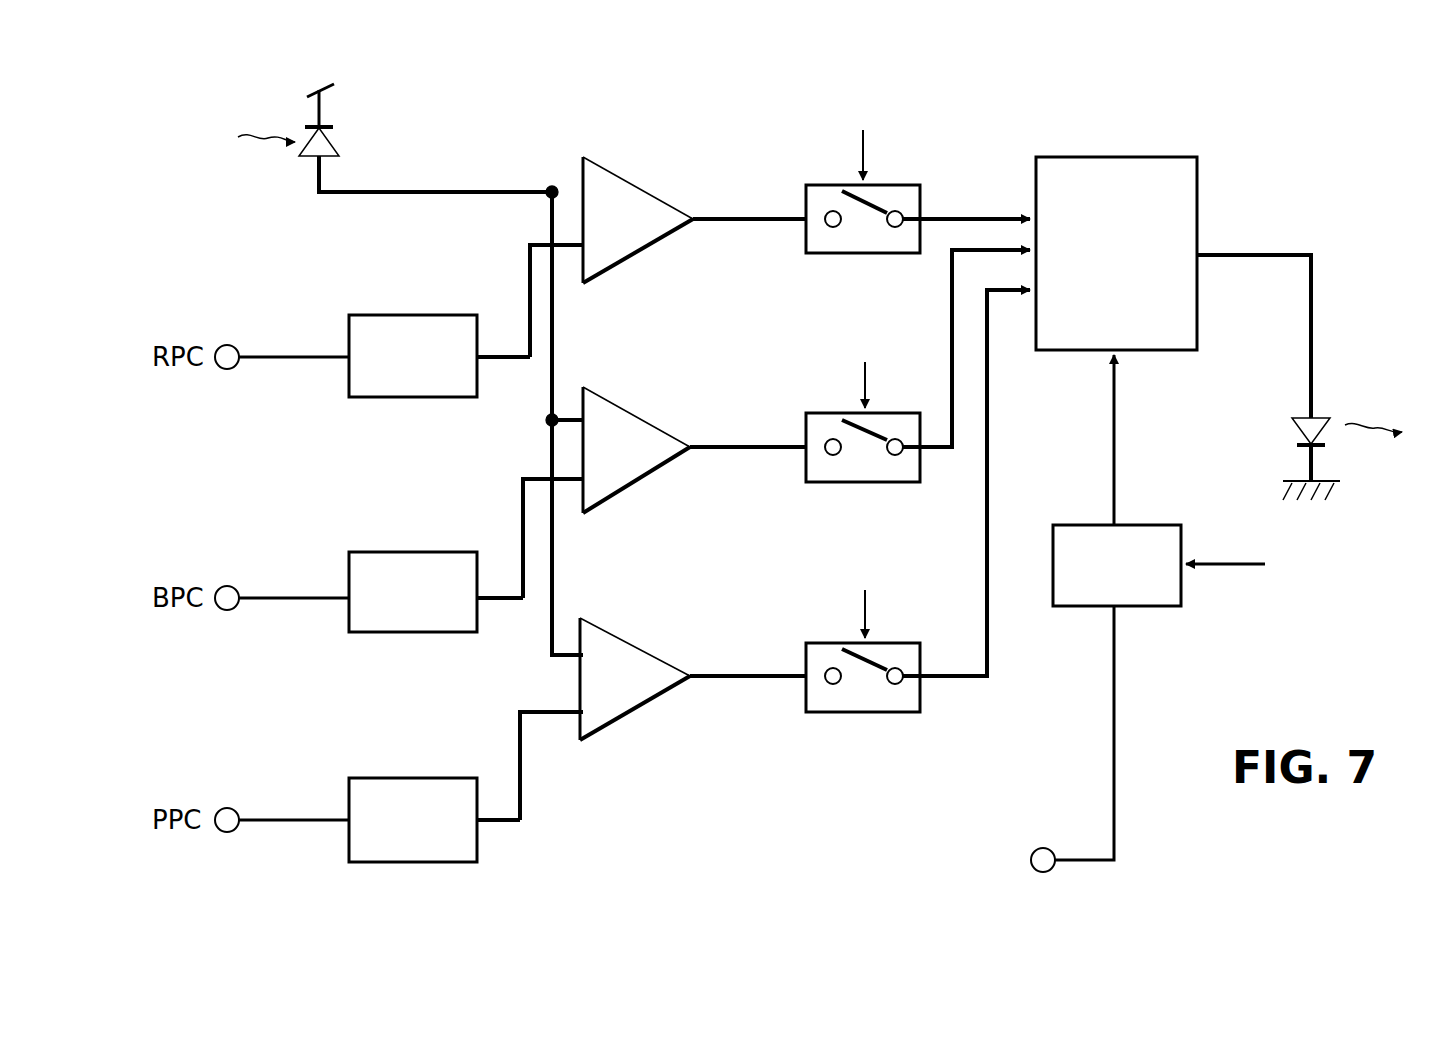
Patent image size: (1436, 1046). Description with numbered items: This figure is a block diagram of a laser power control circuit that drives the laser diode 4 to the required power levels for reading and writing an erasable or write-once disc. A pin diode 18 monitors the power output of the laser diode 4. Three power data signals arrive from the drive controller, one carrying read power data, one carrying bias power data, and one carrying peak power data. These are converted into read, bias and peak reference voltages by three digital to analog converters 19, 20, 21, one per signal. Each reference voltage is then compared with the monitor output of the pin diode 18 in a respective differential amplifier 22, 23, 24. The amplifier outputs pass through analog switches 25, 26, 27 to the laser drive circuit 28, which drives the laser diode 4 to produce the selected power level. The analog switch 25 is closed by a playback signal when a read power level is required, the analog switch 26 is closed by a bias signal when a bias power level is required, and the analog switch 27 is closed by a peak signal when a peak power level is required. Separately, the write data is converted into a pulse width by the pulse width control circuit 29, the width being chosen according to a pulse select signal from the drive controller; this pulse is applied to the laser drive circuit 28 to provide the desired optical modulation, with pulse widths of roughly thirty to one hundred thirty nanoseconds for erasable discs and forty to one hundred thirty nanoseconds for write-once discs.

The pin diode 18 is at (330, 148).
The digital to analog (D/A) converter 19 is at (415, 322).
The digital to analog (D/A) converter 20 is at (415, 557).
The digital to analog (D/A) converter 21 is at (417, 783).
The differential amplifier 22 is at (635, 197).
The differential amplifier 23 is at (635, 427).
The differential amplifier 24 is at (635, 657).
The analog switch 25 is at (893, 190).
The analog switch 26 is at (832, 412).
The analog switch 27 is at (900, 645).
The laser drive circuit 28 is at (1068, 348).
The pulse width control circuit 29 is at (1145, 528).
The laser diode 4 is at (1313, 418).